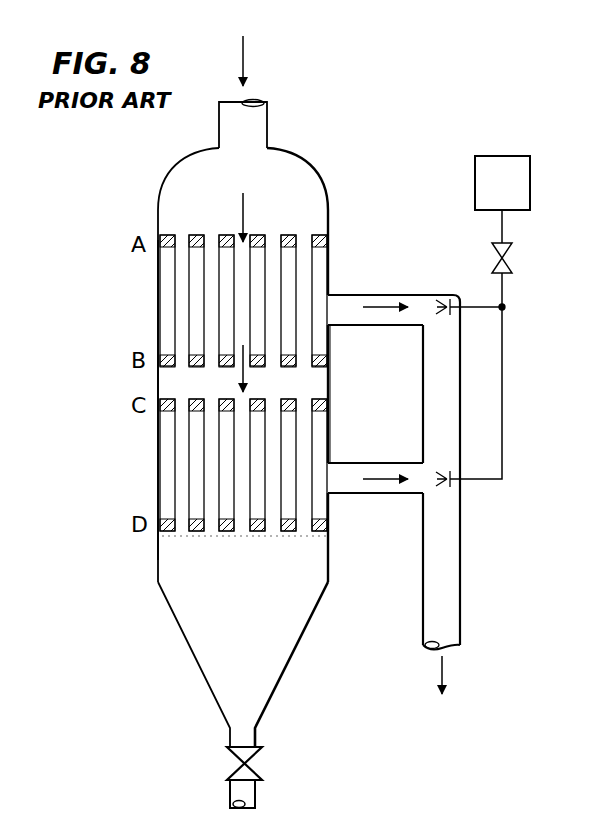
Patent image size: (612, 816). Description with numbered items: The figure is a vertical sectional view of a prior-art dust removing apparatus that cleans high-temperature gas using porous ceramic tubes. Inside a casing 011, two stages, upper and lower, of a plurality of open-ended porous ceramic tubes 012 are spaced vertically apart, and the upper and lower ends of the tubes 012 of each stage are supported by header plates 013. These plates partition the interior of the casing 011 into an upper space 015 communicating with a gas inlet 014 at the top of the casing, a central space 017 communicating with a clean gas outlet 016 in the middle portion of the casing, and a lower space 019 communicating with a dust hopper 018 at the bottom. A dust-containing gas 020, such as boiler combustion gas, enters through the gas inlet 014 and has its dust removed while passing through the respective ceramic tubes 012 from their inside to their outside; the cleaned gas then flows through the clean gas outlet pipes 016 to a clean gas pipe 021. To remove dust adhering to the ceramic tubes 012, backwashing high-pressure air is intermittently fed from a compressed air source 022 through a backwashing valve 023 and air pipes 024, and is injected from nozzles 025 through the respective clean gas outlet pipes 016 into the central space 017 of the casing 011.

The casing 011 is at (158, 278).
The open-ended porous ceramic tubes 012 is at (180, 326).
The header plates 013 is at (330, 242).
The gas inlet 014 is at (268, 128).
The upper space 015 is at (180, 180).
The clean gas outlet pipes 016 is at (340, 295).
The central space 017 is at (320, 352).
The dust hopper 018 is at (178, 628).
The lower space 019 is at (218, 543).
The dust-containing gas 020 is at (247, 55).
The clean gas pipe 021 is at (462, 568).
The compressed air source 022 is at (513, 156).
The backwashing valve 023 is at (513, 258).
The air pipes 024 is at (504, 396).
The nozzles 025 is at (452, 297).